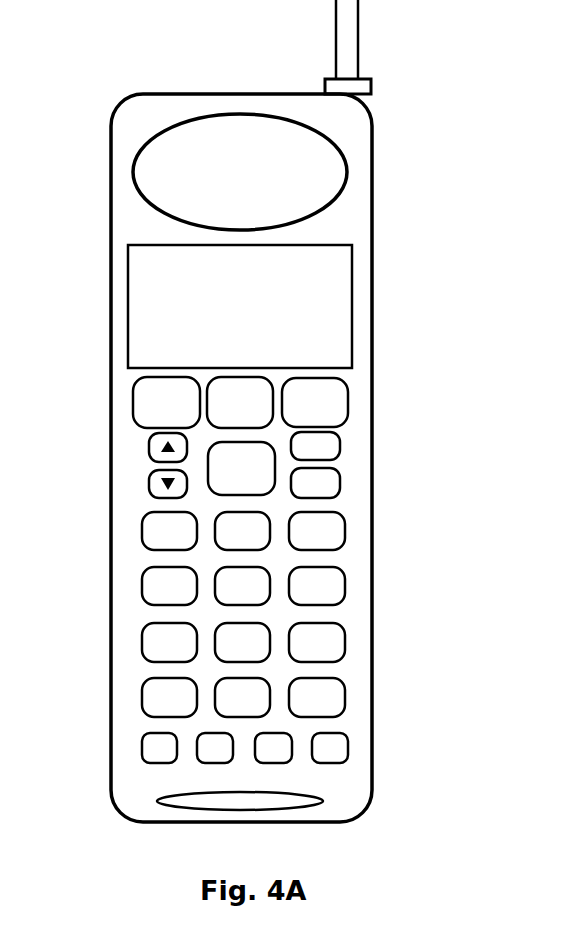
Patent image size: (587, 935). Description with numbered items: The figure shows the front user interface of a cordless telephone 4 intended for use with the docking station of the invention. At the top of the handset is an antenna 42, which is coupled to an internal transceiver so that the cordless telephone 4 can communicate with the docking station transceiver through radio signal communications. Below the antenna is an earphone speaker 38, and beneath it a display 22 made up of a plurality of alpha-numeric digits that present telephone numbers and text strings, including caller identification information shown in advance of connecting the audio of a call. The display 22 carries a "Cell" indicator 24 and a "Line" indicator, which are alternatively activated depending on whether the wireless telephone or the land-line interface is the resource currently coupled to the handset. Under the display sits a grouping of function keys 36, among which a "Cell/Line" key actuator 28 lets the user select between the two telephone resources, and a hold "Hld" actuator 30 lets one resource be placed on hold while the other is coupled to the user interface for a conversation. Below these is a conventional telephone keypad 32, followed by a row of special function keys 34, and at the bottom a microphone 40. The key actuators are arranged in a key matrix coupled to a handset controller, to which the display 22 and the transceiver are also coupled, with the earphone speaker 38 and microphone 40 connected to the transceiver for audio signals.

The cordless telephone 4 is at (225, 94).
The antenna 42 is at (358, 33).
The earphone speaker 38 is at (151, 140).
The display 22 is at (353, 287).
The "Cell" indicator 24 is at (140, 356).
The function keys 36 is at (345, 352).
The "Cell/Line" key actuator 28 is at (272, 378).
The hold "Hld" actuator 30 is at (340, 445).
The telephone keypad 32 is at (128, 715).
The special function keys 34 is at (137, 765).
The microphone 40 is at (157, 797).